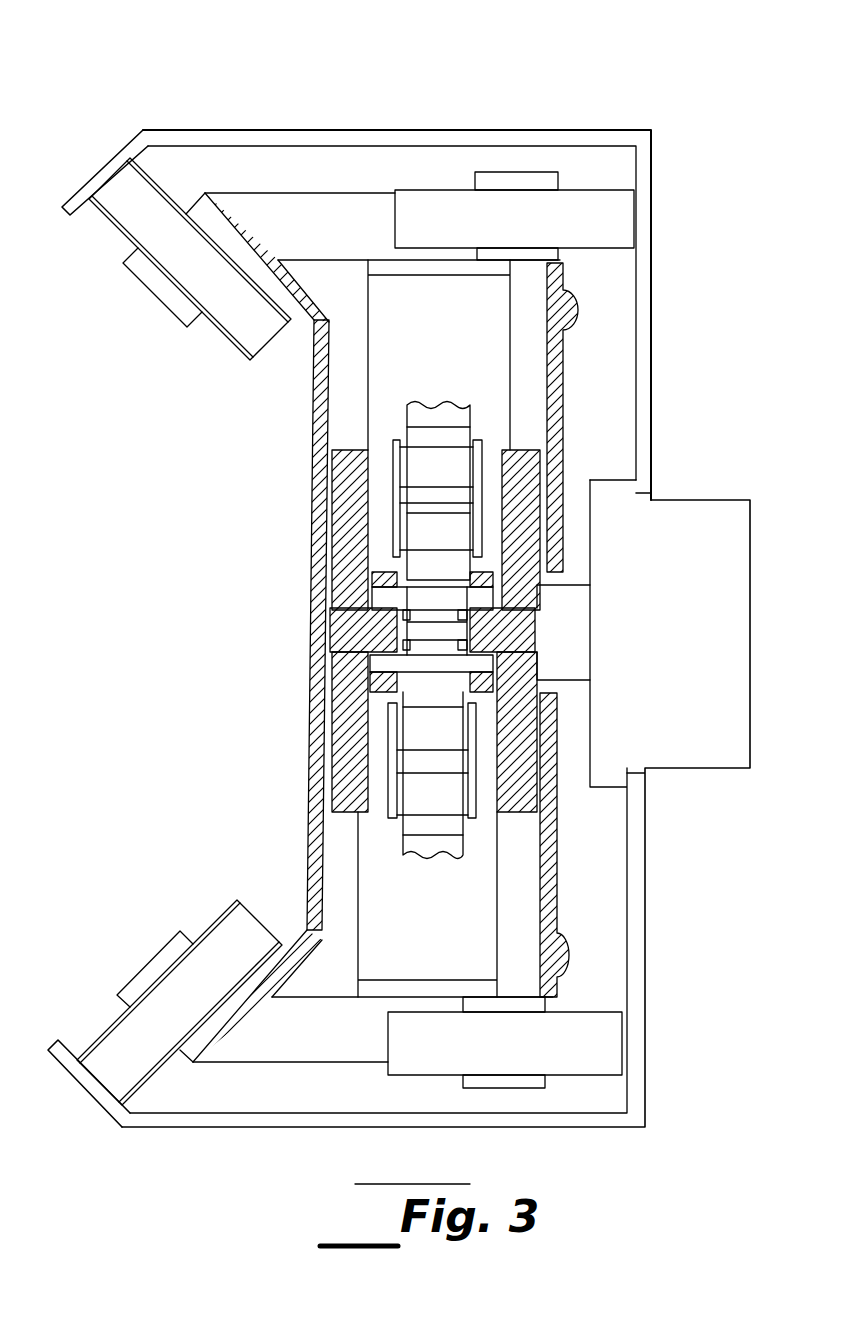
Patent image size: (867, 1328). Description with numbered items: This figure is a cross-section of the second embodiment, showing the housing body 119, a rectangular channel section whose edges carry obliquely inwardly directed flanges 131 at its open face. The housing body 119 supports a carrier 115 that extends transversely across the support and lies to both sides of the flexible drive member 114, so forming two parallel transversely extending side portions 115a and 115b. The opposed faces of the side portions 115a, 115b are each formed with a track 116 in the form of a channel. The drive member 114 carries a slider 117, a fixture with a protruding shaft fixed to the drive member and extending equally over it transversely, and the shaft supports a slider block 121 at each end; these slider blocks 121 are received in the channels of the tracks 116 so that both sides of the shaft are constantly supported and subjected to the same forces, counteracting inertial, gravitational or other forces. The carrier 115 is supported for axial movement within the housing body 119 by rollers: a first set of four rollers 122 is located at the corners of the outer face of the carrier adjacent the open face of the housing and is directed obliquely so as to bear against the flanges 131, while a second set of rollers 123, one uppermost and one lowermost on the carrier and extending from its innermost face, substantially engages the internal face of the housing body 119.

The drive member 114 is at (445, 845).
The carrier 115 is at (321, 192).
The side portion 115a is at (568, 395).
The side portion 115b is at (315, 413).
The track 116 is at (523, 357).
The slider 117 is at (390, 577).
The housing body 119 is at (572, 130).
The slider block 121 is at (343, 790).
The rollers 122 is at (121, 232).
The rollers 123 is at (634, 222).
The flanges 131 is at (94, 166).